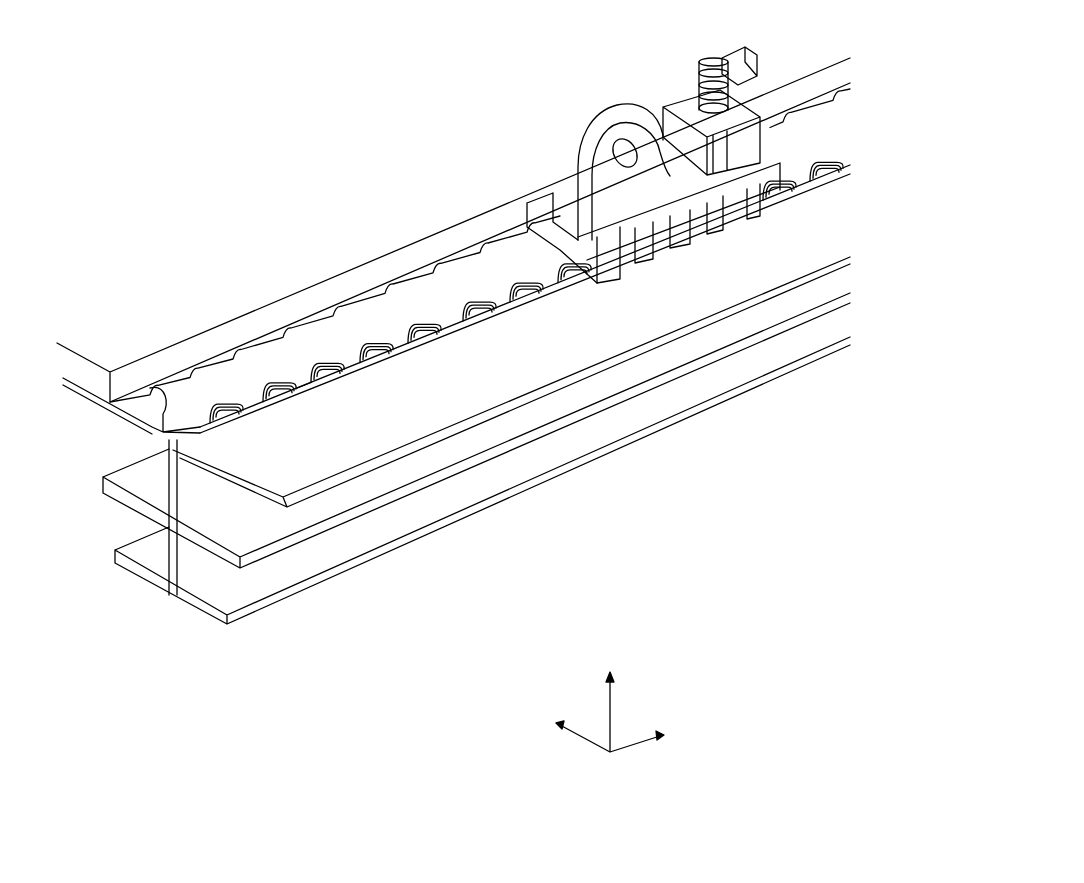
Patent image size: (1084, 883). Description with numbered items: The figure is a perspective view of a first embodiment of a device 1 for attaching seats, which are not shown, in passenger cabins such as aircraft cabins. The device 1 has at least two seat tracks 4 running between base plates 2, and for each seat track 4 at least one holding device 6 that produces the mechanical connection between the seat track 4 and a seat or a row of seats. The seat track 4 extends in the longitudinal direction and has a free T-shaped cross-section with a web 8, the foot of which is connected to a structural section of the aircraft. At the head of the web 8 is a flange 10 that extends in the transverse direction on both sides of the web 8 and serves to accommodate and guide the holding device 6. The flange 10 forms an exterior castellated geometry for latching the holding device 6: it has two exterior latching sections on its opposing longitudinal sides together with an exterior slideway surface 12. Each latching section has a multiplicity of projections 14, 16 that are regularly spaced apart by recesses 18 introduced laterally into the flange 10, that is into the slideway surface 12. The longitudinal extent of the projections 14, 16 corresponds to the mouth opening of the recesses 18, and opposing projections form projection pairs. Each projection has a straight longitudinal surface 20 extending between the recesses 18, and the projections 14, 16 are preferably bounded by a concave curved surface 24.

The device 1 is at (124, 39).
The base plate 2 is at (110, 347).
The seat track 4 is at (467, 278).
The holding device 6 is at (576, 113).
The web 8 is at (172, 430).
The flange 10 is at (153, 403).
The slideway surface 12 is at (378, 323).
The projection 14 is at (247, 423).
The projection 16 is at (298, 407).
The recess 18 is at (268, 382).
The straight longitudinal surface 20 is at (310, 392).
The concave curved surface 24 is at (273, 395).